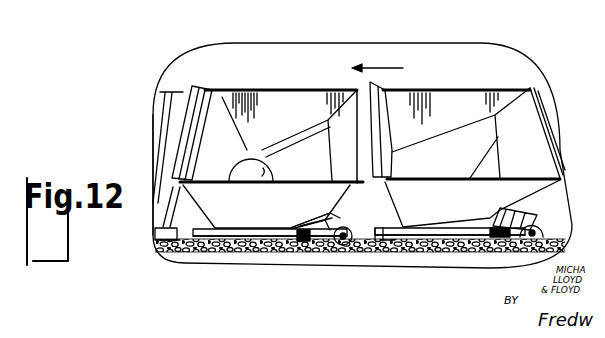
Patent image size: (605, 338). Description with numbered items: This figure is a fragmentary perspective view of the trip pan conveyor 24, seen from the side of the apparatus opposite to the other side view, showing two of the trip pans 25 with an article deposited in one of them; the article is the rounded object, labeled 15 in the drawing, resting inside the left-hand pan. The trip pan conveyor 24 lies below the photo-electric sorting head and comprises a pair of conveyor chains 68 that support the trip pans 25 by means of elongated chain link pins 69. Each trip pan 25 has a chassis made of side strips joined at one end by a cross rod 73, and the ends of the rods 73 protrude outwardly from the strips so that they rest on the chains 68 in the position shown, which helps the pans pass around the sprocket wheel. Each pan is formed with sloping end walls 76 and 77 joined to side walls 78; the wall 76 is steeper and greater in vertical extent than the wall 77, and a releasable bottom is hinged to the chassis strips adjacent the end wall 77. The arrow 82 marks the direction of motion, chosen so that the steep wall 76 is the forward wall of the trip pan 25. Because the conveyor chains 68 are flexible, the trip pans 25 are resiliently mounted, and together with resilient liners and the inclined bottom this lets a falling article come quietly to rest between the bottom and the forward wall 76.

The ball / load 15 is at (258, 148).
The trip pan conveyor 24 is at (148, 125).
The trip pan 25 is at (246, 86).
The conveyor chain 68 is at (420, 247).
The elongated chain link pin 69 is at (297, 247).
The cross rod 73 is at (210, 250).
The sloping end wall 76 is at (213, 117).
The sloping end wall 77 is at (523, 115).
The side wall 78 is at (497, 192).
The arrow 82 is at (377, 60).